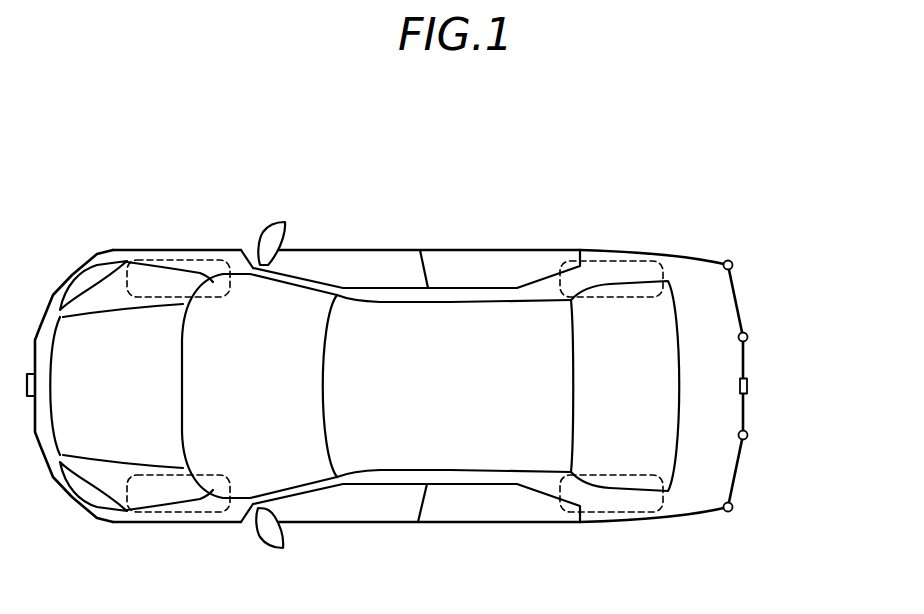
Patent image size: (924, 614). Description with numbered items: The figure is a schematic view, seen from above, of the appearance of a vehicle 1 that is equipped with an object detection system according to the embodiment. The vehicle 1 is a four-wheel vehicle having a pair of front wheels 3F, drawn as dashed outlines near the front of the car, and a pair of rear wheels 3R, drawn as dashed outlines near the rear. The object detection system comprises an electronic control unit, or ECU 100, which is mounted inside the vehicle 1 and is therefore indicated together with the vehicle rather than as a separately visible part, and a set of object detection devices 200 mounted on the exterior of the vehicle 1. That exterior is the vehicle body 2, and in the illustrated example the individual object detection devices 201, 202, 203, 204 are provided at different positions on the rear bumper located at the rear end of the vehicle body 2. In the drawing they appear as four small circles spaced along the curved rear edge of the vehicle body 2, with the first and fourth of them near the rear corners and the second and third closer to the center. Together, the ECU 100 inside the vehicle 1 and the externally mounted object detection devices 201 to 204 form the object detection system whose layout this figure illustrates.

The vehicle 1 is at (457, 349).
The electronic control unit (ECU) 100 is at (457, 349).
The vehicle body 2 is at (687, 258).
The front wheels 3F is at (181, 260).
The rear wheels 3R is at (615, 261).
The object detection devices 200 is at (806, 354).
The object detection device 201 is at (733, 507).
The object detection device 202 is at (747, 436).
The object detection device 203 is at (747, 336).
The object detection device 204 is at (732, 263).